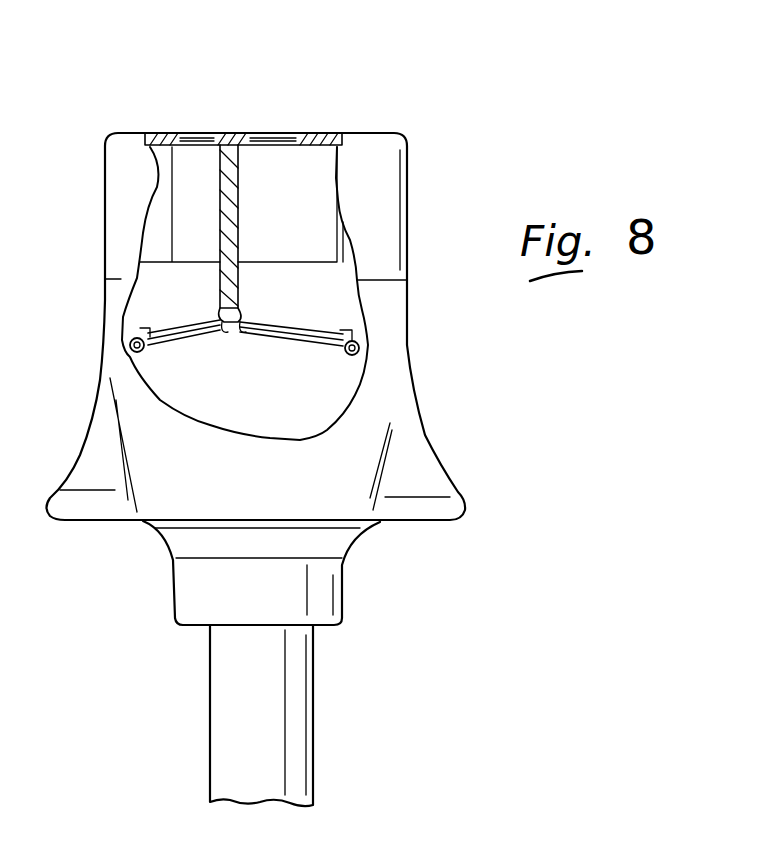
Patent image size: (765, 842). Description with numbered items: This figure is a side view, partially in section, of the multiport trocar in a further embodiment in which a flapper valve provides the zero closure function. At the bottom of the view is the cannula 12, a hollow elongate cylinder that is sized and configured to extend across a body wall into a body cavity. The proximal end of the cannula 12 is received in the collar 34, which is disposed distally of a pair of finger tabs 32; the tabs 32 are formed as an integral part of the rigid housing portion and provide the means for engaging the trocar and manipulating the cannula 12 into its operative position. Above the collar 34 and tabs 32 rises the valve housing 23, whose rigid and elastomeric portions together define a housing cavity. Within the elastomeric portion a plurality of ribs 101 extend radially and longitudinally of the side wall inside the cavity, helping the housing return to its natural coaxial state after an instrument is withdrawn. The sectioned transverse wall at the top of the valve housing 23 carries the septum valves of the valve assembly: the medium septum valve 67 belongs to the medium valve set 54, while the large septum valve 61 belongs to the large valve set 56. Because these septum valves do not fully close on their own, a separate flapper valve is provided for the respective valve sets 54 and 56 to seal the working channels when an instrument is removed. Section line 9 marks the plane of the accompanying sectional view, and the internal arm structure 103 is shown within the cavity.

The section line 9- 9 is at (52, 65).
The cannula 12 is at (218, 708).
The valve housing 23 is at (105, 292).
The finger tabs 32 is at (427, 473).
The collar 34 is at (198, 605).
The medium valve set 54 is at (213, 108).
The large valve set 56 is at (325, 108).
The large septum valve 61 is at (251, 133).
The medium septum valve 67 is at (182, 132).
The ribs 101 is at (143, 403).
The snap arms 103 is at (358, 363).